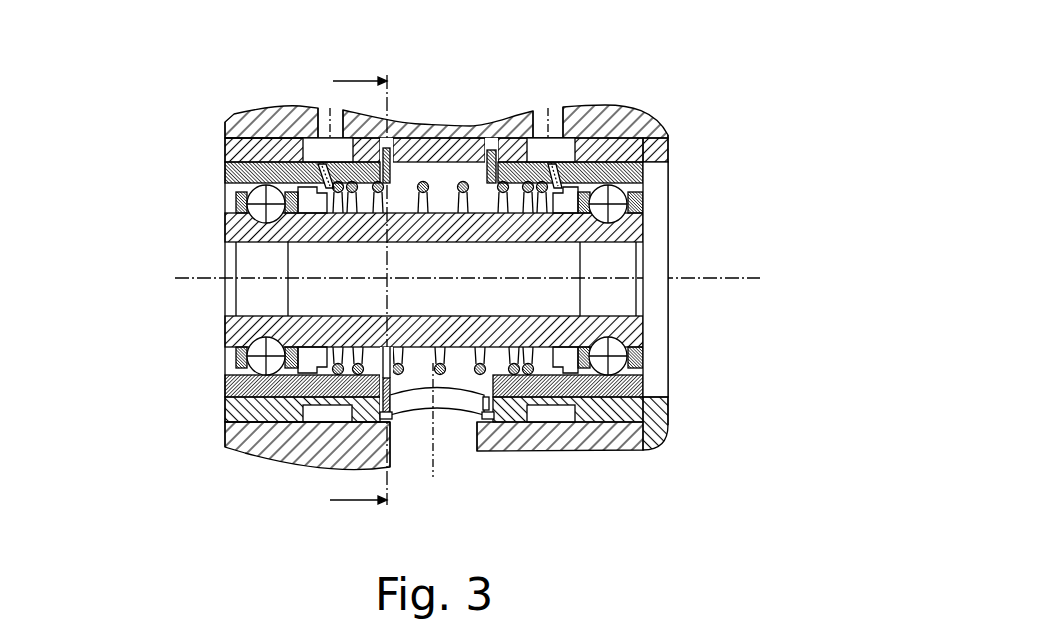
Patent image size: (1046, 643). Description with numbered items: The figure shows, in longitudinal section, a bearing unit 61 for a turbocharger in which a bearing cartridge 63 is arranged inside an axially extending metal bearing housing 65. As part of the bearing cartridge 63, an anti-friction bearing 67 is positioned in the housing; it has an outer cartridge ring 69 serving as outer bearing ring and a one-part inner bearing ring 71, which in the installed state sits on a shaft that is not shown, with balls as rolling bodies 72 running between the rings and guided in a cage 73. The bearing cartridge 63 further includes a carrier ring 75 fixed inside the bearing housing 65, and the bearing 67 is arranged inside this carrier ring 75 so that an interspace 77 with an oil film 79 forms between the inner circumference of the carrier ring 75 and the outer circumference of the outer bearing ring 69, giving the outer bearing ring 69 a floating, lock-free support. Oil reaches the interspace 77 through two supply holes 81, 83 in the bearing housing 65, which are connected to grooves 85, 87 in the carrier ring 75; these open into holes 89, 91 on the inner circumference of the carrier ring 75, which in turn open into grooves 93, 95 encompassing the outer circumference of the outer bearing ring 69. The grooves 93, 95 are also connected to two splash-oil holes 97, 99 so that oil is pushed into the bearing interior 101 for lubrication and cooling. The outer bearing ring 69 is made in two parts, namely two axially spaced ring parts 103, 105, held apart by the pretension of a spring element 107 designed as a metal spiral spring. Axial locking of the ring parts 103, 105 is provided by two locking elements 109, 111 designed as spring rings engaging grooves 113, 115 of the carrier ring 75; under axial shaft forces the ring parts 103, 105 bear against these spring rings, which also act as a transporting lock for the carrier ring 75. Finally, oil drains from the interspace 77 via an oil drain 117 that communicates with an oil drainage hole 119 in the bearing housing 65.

The bearing unit 61 is at (727, 65).
The bearing cartridge 63 is at (195, 408).
The bearing housing 65 is at (628, 138).
The anti-friction bearing 67 is at (678, 358).
The outer cartridge ring 69 is at (645, 387).
The inner bearing ring 71 is at (225, 227).
The rolling bodies 72 is at (643, 192).
The cage 73 is at (640, 205).
The carrier ring 75 is at (662, 142).
The interspace 77 is at (232, 155).
The oil film 79 is at (650, 410).
The supply hole 81 is at (318, 130).
The supply hole 83 is at (552, 140).
The groove 85 is at (350, 140).
The groove 87 is at (531, 135).
The hole 89 is at (283, 128).
The hole 91 is at (588, 140).
The groove 93 is at (355, 425).
The groove 95 is at (540, 422).
The splash-oil hole 97 is at (256, 131).
The splash-oil hole 99 is at (522, 160).
The bearing interior 101 is at (225, 377).
The ring part 103 is at (227, 177).
The ring part 105 is at (645, 165).
The spring element 107 is at (443, 418).
The locking element 109 is at (386, 430).
The locking element 111 is at (488, 413).
The groove 113 is at (389, 150).
The groove 115 is at (490, 150).
The oil drain 117 is at (425, 175).
The oil drainage hole 119 is at (468, 435).